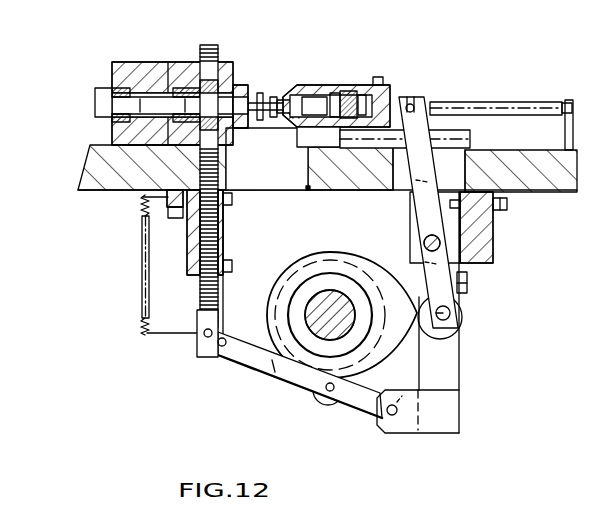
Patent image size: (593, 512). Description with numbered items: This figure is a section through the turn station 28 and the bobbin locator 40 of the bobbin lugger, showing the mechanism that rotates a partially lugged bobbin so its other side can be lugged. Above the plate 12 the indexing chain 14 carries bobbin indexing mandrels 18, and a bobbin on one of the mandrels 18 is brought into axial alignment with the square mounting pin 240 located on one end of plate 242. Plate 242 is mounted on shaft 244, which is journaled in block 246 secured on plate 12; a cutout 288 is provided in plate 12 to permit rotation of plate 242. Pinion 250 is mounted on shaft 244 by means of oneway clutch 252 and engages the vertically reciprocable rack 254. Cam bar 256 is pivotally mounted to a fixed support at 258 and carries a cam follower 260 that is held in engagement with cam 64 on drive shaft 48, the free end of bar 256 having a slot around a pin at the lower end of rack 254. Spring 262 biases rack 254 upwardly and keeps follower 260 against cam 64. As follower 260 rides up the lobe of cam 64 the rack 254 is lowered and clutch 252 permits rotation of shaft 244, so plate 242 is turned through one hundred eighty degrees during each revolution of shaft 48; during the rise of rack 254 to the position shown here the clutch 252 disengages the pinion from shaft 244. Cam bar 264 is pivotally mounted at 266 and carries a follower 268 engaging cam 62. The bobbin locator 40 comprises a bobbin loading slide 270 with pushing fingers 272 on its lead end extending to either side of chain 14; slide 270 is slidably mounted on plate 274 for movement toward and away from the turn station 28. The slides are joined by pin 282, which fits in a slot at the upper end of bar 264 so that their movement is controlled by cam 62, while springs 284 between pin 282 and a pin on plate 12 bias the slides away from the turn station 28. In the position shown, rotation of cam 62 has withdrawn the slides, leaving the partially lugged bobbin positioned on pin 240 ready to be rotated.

The turn station 28 is at (116, 44).
The shaft 244 is at (157, 100).
The pinion 250 is at (222, 75).
The oneway clutch 252 is at (236, 88).
The plate 242 is at (244, 92).
The bobbin indexing mandrel 18 is at (324, 100).
The indexing chain 14 is at (354, 98).
The pin 282 is at (411, 102).
The bobbin locator 40 is at (446, 64).
The bobbin loading slide 270 is at (432, 97).
The springs 284 is at (512, 102).
The block 246 is at (112, 72).
The plate 12 is at (88, 153).
The square mounting pin 240 is at (291, 116).
The pushing fingers 272 is at (298, 114).
The plate 274 is at (470, 143).
The spring 262 is at (142, 243).
The rack 254 is at (214, 246).
The cutout 288 is at (312, 190).
The drive shaft 48 is at (333, 292).
The cam 64 is at (302, 270).
The pivot 266 is at (424, 240).
The cam bar 264 is at (440, 228).
The follower 268 is at (463, 310).
The cam 62 is at (400, 348).
The cam bar 256 is at (280, 374).
The cam follower 260 is at (326, 404).
The pivot 258 is at (394, 416).